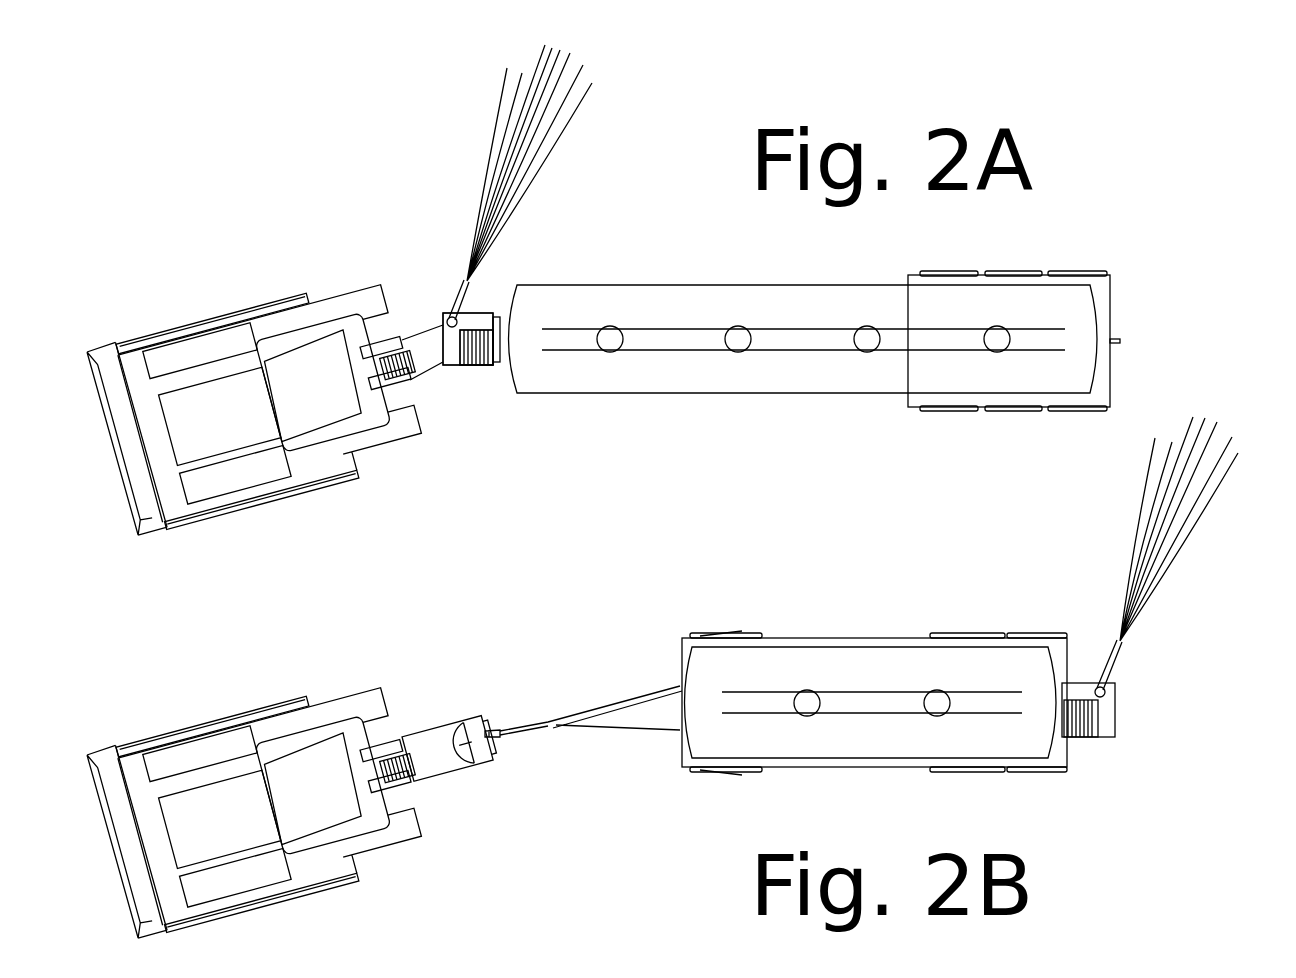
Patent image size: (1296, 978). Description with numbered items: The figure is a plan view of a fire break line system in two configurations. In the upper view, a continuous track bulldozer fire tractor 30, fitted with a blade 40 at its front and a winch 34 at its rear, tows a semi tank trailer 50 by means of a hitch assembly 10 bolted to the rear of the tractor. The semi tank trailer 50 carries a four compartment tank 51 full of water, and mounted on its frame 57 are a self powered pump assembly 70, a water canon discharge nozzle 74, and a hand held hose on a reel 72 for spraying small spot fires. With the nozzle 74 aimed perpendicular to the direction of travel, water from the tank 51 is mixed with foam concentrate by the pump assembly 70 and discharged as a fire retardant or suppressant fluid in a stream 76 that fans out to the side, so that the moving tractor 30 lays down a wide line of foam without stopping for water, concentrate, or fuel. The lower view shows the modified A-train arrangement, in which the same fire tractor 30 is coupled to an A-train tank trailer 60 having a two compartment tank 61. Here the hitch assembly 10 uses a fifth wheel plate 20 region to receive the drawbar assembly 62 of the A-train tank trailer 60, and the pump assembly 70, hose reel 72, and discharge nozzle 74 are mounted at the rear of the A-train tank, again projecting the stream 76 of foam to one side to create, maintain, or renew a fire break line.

In FIG. 2A, the hitch assembly 10 is at (451, 369).
In FIG. 2B, the hitch assembly 10 is at (432, 726).
In FIG. 2B, the fifth wheel plate 20 is at (489, 737).
In FIG. 2A, the fire tractor 30 is at (339, 291).
In FIG. 2B, the fire tractor 30 is at (339, 694).
In FIG. 2A, the winch 34 is at (413, 370).
In FIG. 2B, the winch 34 is at (401, 740).
In FIG. 2A, the blade 40 is at (123, 460).
In FIG. 2B, the blade 40 is at (123, 863).
In FIG. 2A, the semi tank trailer 50 is at (574, 284).
In FIG. 2A, the four compartment tank 51 is at (645, 300).
In FIG. 2A, the frame 57 is at (502, 313).
In FIG. 2B, the A-train tank trailer 60 is at (788, 647).
In FIG. 2B, the two compartment tank 61 is at (841, 660).
In FIG. 2B, the drawbar assembly 62 is at (595, 711).
In FIG. 2A, the pump assembly 70 is at (478, 312).
In FIG. 2B, the pump assembly 70 is at (1088, 681).
In FIG. 2A, the hose reel 72 is at (487, 368).
In FIG. 2B, the hose reel 72 is at (1085, 738).
In FIG. 2A, the water canon discharge nozzle 74 is at (453, 307).
In FIG. 2B, the water canon discharge nozzle 74 is at (1112, 673).
In FIG. 2A, the stream 76 is at (478, 216).
In FIG. 2B, the stream 76 is at (1128, 585).